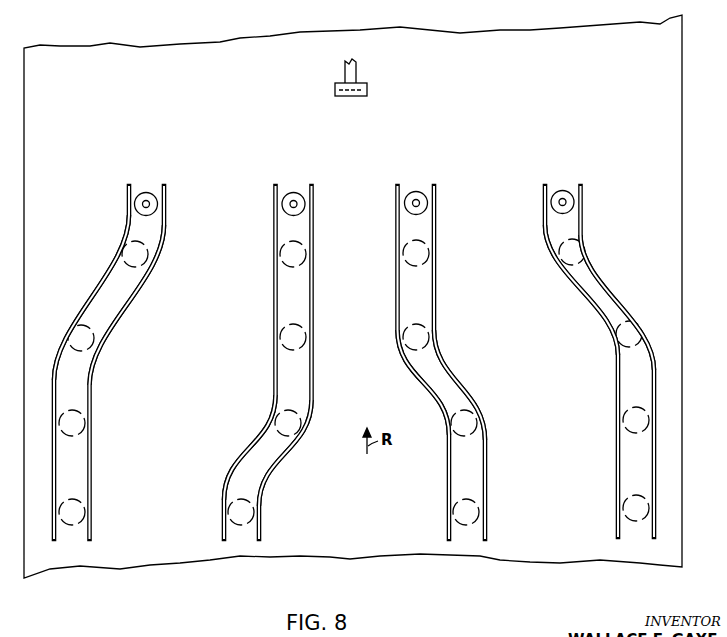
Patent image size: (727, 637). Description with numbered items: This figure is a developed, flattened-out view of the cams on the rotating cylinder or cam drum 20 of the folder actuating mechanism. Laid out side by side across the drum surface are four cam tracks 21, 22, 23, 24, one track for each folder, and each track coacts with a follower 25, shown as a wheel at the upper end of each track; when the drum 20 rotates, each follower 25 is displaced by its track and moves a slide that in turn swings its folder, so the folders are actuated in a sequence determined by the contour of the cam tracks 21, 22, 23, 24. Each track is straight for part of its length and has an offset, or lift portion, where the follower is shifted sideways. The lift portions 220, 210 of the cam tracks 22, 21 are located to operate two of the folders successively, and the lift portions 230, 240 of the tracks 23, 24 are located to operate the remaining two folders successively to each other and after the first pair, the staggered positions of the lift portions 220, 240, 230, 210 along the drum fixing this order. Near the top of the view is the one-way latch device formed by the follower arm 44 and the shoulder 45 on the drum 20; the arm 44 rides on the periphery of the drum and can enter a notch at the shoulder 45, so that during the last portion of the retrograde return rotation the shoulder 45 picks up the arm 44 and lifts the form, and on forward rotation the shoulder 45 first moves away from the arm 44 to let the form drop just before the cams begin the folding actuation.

The cam drum 20 is at (353, 296).
The cam track 21 is at (556, 262).
The cam track 22 is at (149, 268).
The cam track 23 is at (436, 267).
The cam track 24 is at (313, 267).
The follower 25 is at (146, 192).
The follower arm 44 is at (354, 70).
The shoulder 45 is at (368, 93).
The lift portion 210 is at (578, 297).
The lift portion 220 is at (137, 297).
The lift portion 230 is at (417, 385).
The lift portion 240 is at (271, 426).